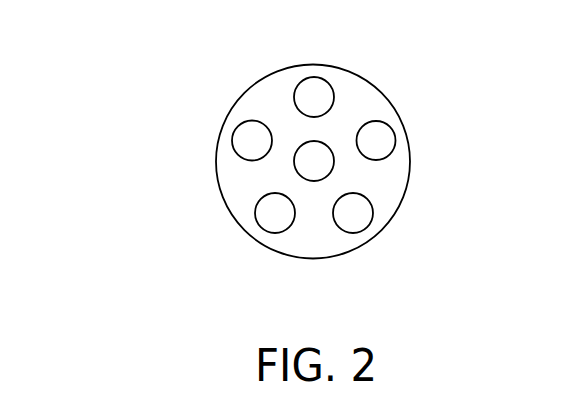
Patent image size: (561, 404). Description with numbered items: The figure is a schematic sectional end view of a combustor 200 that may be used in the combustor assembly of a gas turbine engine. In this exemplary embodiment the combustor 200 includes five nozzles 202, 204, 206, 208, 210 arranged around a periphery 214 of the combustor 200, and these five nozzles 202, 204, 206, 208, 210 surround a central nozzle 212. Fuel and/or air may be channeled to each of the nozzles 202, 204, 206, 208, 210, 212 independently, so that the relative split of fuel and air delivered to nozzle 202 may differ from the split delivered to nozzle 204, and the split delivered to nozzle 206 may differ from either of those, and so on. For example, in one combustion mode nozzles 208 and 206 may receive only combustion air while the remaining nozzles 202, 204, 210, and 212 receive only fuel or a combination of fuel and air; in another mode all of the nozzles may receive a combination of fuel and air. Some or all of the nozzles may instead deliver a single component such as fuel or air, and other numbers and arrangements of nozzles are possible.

The combustor 200 is at (223, 73).
The nozzle 202 is at (308, 77).
The nozzle 204 is at (393, 132).
The nozzle 206 is at (372, 202).
The nozzle 208 is at (260, 227).
The nozzle 210 is at (236, 127).
The central nozzle 212 is at (295, 168).
The periphery 214 is at (310, 233).